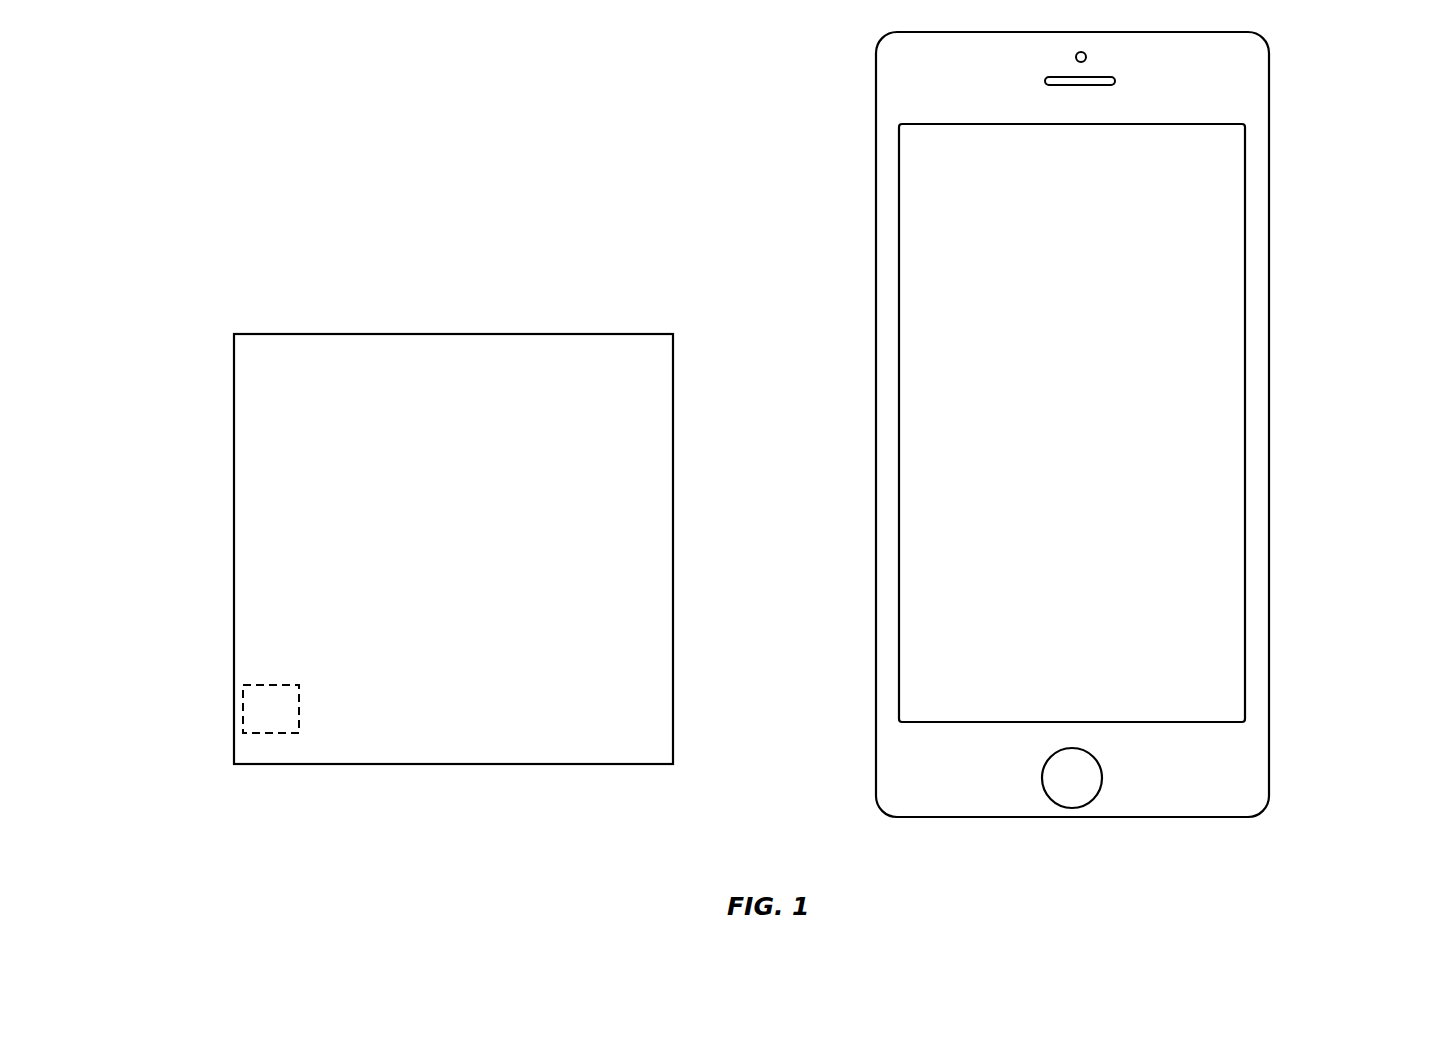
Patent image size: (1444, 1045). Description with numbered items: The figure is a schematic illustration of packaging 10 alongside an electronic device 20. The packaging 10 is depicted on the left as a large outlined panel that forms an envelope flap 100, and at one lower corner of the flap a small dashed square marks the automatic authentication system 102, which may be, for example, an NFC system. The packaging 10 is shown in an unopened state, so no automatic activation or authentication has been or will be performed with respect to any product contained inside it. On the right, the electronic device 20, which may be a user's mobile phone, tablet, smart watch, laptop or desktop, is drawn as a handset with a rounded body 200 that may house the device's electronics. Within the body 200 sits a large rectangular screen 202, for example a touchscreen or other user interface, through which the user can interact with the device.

The packaging 10 is at (223, 324).
The envelope flap 100 is at (478, 564).
The automatic authentication system 102 is at (232, 719).
The electronic device 20 is at (1151, 424).
The body 200 is at (1255, 482).
The screen 202 is at (1098, 444).